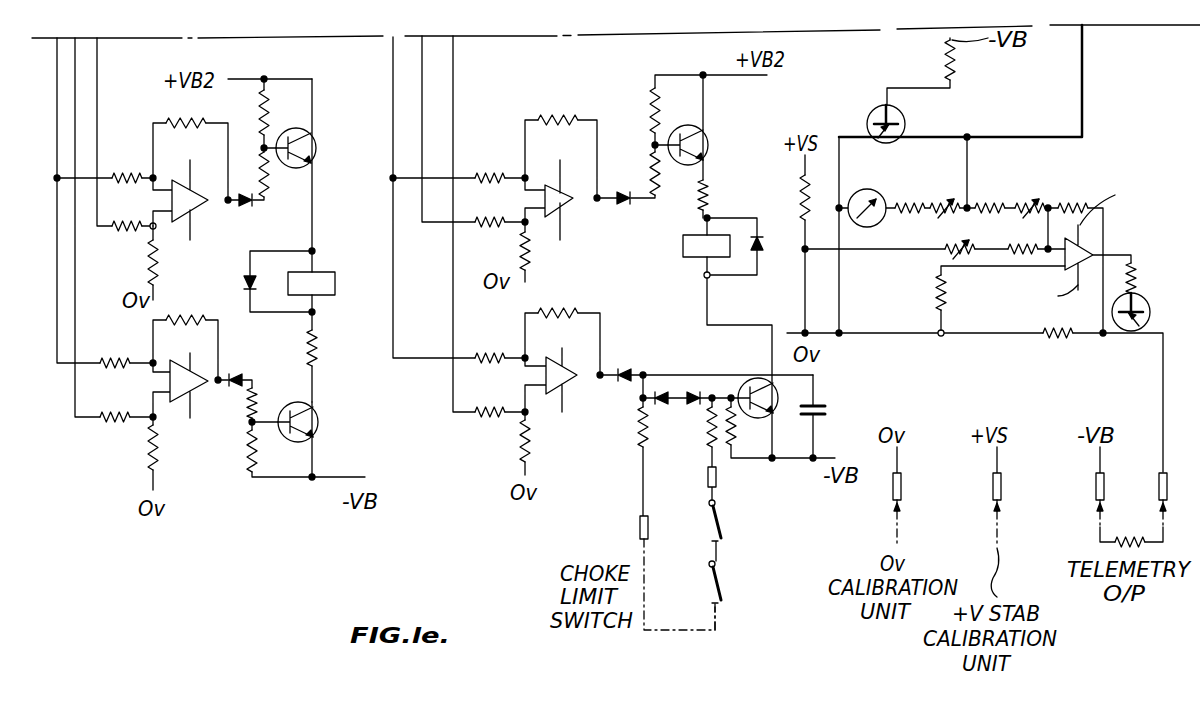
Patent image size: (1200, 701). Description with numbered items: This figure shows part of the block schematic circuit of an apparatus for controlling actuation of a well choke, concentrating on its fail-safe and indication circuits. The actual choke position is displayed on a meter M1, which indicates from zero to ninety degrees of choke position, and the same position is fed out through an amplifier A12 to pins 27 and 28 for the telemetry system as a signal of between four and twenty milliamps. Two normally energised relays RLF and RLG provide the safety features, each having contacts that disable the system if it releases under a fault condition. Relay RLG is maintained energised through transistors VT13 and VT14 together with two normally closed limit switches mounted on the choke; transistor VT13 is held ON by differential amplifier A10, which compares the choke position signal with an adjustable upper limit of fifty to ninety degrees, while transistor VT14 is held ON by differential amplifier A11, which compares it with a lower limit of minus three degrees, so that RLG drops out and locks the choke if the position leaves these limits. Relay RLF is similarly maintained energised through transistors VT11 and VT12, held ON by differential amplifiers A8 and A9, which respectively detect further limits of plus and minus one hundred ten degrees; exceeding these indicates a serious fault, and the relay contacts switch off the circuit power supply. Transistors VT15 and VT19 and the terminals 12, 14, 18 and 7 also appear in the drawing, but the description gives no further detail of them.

The transistor VT11 is at (314, 142).
The transistor VT12 is at (316, 420).
The transistor VT13 is at (706, 136).
The transistor VT14 is at (754, 379).
The transistor VT15 is at (1126, 334).
The transistor VT19 is at (870, 112).
The differential amplifier A8 is at (172, 197).
The differential amplifier A9 is at (170, 381).
The differential amplifier A10 is at (548, 190).
The differential amplifier A11 is at (577, 372).
The amplifier A12 is at (1097, 247).
The meter M1 is at (870, 227).
The relay RLF is at (362, 243).
The relay RLG is at (660, 262).
The normally closed switch contacts 12 is at (708, 478).
The choke limit switch 14 is at (640, 522).
The 0v calibration unit terminal 18 is at (902, 488).
The +V stab calibration unit terminal 7 is at (1003, 488).
The pin 27 is at (1096, 480).
The pin 28 is at (1160, 480).